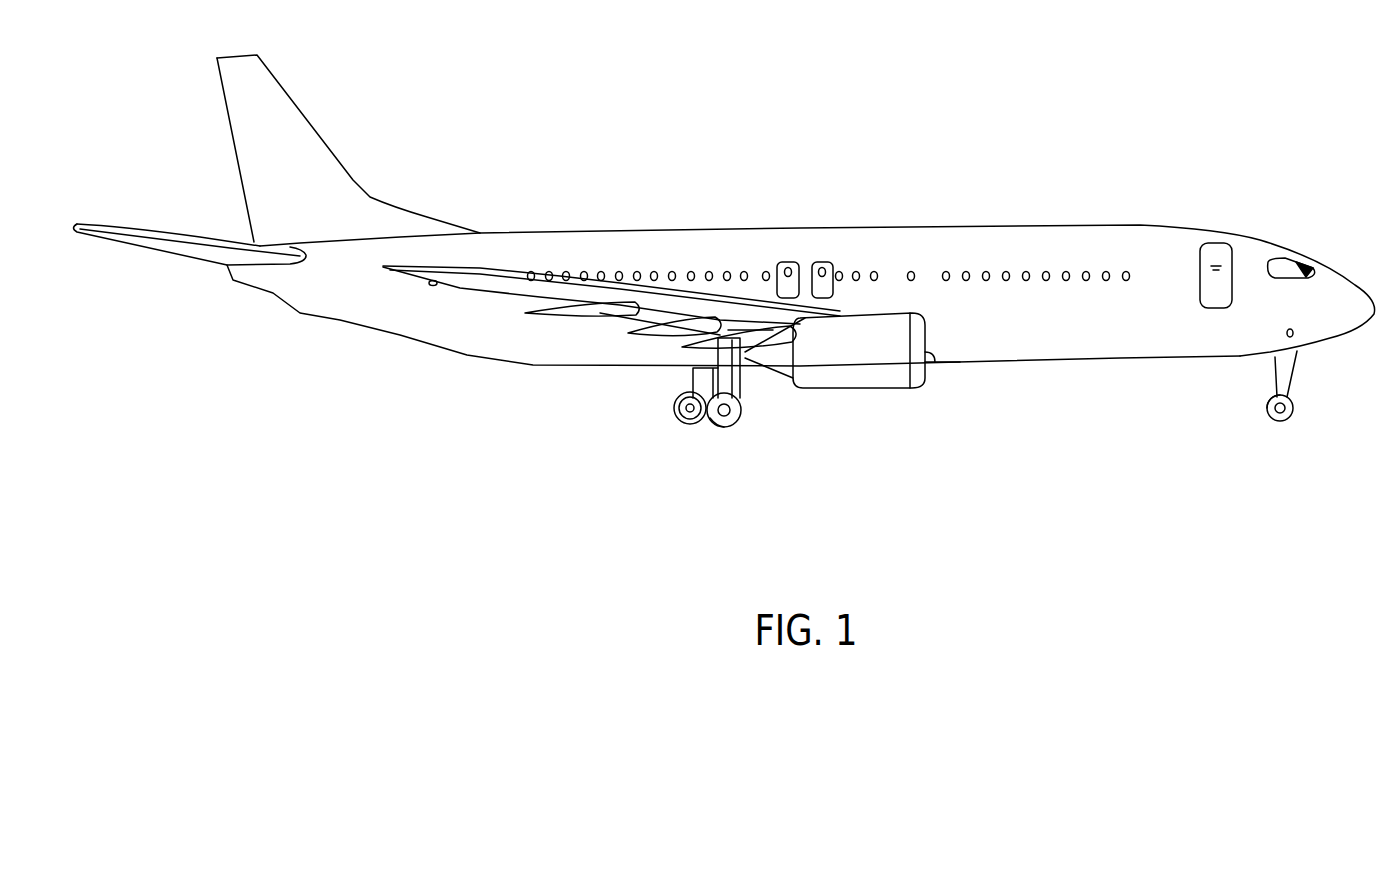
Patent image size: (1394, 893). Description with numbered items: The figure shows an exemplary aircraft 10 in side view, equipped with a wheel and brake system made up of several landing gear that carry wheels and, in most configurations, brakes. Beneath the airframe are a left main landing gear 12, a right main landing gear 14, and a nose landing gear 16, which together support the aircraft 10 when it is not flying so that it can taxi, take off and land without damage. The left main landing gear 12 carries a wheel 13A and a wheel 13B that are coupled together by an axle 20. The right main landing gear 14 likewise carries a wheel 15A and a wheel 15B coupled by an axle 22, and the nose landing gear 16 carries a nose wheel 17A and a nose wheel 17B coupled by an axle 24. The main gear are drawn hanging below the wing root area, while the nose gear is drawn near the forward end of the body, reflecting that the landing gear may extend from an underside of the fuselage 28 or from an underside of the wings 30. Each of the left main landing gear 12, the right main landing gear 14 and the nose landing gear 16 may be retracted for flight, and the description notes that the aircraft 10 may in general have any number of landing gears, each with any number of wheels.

The aircraft 10 is at (918, 121).
The left main landing gear 12 is at (682, 384).
The wheel 13A is at (683, 393).
The wheel 13B is at (688, 421).
The right main landing gear 14 is at (716, 436).
The wheel 15A is at (743, 406).
The wheel 15B is at (698, 449).
The nose landing gear 16 is at (1282, 413).
The nose wheel 17A is at (1265, 412).
The nose wheel 17B is at (1293, 412).
The axle 20 is at (673, 410).
The axle 22 is at (738, 424).
The axle 24 is at (1284, 422).
The fuselage 28 is at (1270, 356).
The wings 30 is at (795, 336).